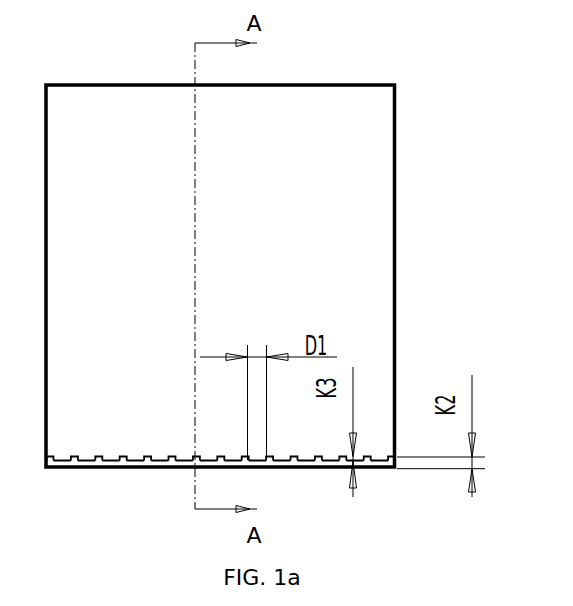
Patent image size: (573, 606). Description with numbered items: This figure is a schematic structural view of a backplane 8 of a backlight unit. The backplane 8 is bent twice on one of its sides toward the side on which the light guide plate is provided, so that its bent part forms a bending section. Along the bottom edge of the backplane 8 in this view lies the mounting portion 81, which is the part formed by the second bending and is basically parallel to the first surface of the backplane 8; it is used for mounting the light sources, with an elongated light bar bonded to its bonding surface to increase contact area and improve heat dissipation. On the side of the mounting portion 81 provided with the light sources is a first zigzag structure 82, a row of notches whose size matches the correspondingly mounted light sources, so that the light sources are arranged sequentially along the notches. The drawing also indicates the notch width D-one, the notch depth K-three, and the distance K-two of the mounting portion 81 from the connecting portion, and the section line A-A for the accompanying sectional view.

The backplane 8 is at (396, 287).
The mounting portion 81 is at (57, 461).
The first zigzag structure 82 is at (98, 457).